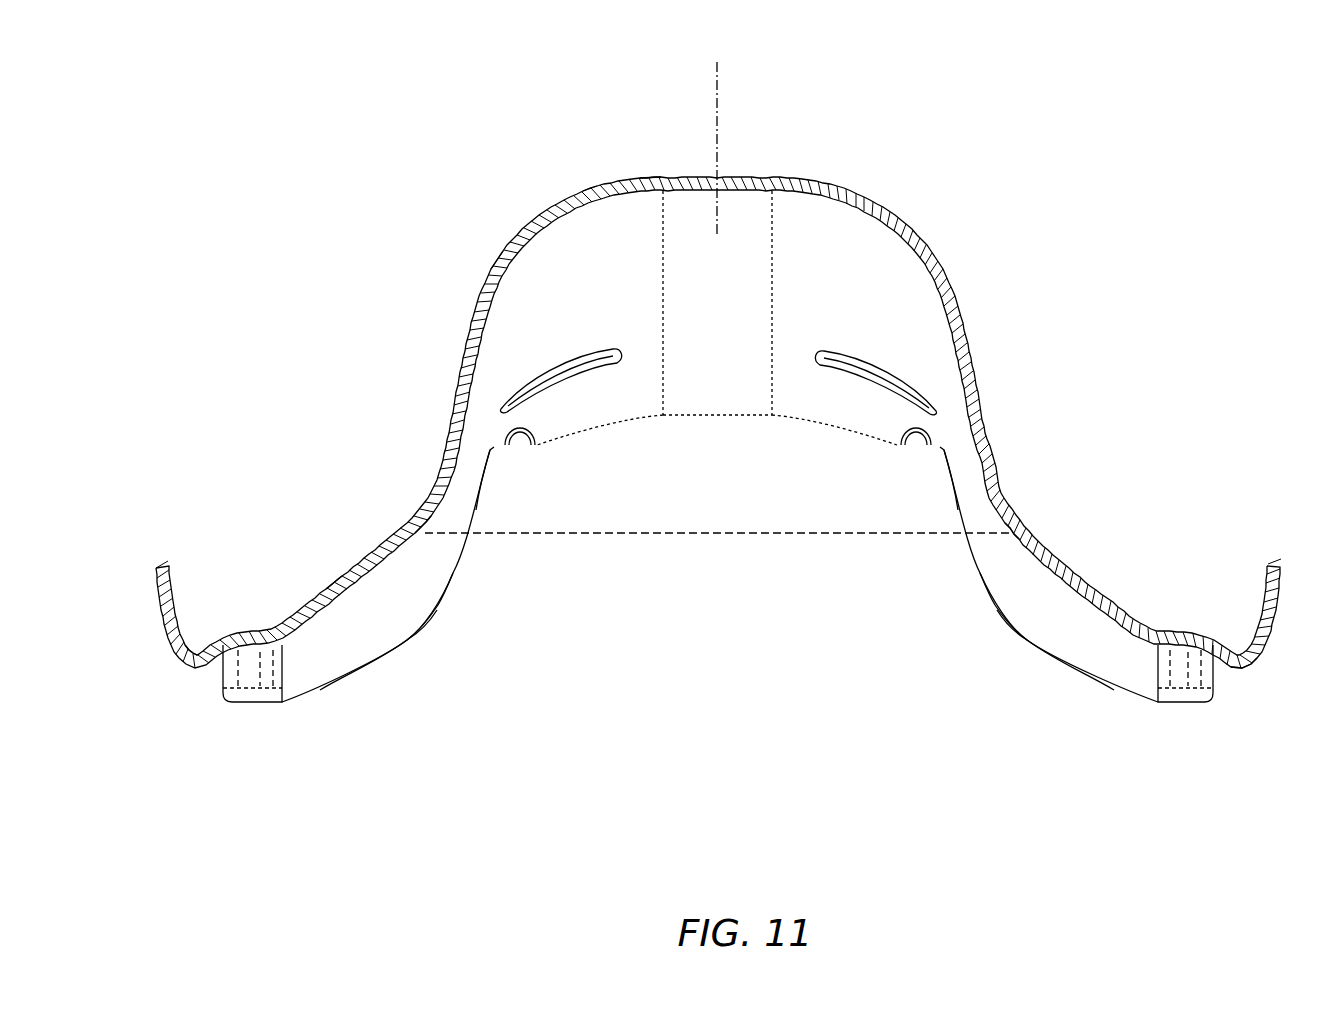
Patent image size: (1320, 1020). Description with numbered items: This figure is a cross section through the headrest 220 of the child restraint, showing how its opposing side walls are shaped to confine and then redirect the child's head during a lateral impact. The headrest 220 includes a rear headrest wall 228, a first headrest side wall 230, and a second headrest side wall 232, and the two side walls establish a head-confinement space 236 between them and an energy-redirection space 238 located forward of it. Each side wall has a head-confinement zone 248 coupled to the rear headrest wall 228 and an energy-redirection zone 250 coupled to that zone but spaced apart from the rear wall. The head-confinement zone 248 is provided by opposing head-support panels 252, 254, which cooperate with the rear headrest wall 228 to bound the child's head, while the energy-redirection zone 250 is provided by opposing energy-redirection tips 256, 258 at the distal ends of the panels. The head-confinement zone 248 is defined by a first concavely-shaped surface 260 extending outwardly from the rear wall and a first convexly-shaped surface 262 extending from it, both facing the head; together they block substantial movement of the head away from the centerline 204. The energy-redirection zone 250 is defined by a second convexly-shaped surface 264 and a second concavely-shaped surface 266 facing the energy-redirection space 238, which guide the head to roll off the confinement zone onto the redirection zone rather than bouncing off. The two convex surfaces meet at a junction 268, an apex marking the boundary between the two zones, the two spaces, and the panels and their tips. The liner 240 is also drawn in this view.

The centerline 204 is at (713, 80).
The headrest 220 is at (618, 180).
The rear headrest wall 228 is at (798, 172).
The first headrest side wall 230 is at (276, 727).
The second headrest side wall 232 is at (1162, 727).
The head-confinement space 236 is at (515, 325).
The energy-redirection space 238 is at (360, 601).
The liner 240 is at (363, 750).
The head-confinement zone 248 is at (482, 439).
The energy-redirection zone 250 is at (425, 602).
The head-support panel 252 is at (466, 644).
The head-support panel 254 is at (978, 650).
The energy-redirection tip 256 is at (363, 674).
The energy-redirection tip 258 is at (1073, 674).
The first concavely-shaped surface 260 is at (553, 330).
The first convexly-shaped surface 262 is at (473, 467).
The second convexly-shaped surface 264 is at (438, 577).
The second concavely-shaped surface 266 is at (360, 650).
The junction 268 is at (425, 537).